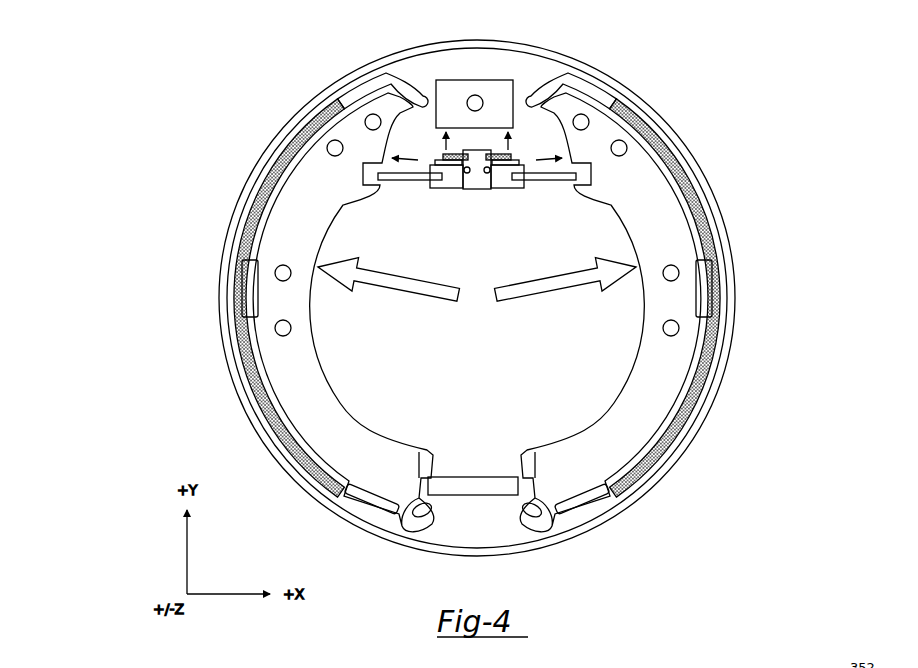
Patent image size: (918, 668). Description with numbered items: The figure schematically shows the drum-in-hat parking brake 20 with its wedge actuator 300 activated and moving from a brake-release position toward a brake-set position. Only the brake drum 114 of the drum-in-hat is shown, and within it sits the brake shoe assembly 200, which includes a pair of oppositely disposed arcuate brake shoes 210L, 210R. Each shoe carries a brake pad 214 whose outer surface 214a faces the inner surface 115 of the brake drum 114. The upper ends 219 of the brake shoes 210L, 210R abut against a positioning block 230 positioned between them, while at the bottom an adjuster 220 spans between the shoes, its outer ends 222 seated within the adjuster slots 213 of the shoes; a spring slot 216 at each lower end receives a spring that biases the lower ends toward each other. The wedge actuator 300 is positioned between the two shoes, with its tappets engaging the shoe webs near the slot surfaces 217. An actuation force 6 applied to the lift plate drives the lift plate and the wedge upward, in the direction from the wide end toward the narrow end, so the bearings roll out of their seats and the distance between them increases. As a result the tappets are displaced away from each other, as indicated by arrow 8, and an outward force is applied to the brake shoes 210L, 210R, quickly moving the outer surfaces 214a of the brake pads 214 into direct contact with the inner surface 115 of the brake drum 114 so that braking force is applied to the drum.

The drum-in-hat parking brake 20 is at (511, 282).
The brake shoe assembly 200 is at (750, 170).
The brake drum 114 is at (726, 258).
The inner surface of the brake drum 115 is at (722, 298).
The brake pad 214 is at (290, 140).
The outer surface of the brake pad 214a is at (313, 108).
The upper ends of the brake shoes 219 is at (388, 78).
The slot surfaces 217 is at (362, 177).
The positioning block 230 is at (471, 78).
The wedge actuator 300 is at (475, 206).
The actuation force 6 is at (442, 150).
The arrow indicating tappet displacement 8 is at (413, 161).
The left brake shoe 210L is at (348, 384).
The right brake shoe 210R is at (594, 384).
The outer ends of the adjuster 222 is at (428, 466).
The adjuster 220 is at (476, 476).
The adjuster slots 213 is at (430, 480).
The spring slot 216 is at (522, 515).